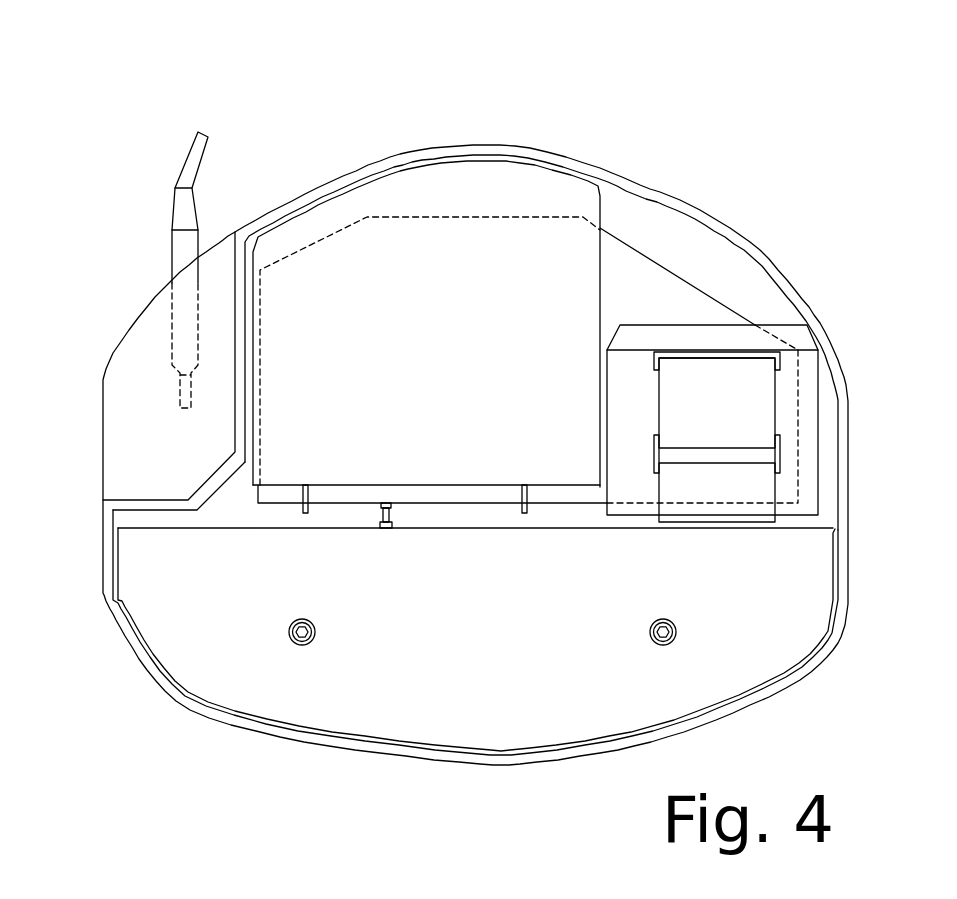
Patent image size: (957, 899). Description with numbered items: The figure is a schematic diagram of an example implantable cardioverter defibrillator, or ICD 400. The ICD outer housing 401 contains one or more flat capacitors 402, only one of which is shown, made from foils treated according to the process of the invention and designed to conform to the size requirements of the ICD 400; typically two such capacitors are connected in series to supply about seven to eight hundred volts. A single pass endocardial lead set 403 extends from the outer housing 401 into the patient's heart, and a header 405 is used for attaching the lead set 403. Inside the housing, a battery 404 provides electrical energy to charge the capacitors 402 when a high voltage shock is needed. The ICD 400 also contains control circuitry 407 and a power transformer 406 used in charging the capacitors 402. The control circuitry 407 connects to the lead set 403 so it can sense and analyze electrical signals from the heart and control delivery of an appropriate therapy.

The implantable cardioverter defibrillator (ICD) 400 is at (455, 132).
The ICD outer housing 401 is at (103, 547).
The flat capacitor 402 is at (482, 630).
The single pass endocardial lead set 403 is at (178, 165).
The battery 404 is at (430, 344).
The header 405 is at (102, 413).
The power transformer 406 is at (768, 323).
The control circuitry 407 is at (662, 265).